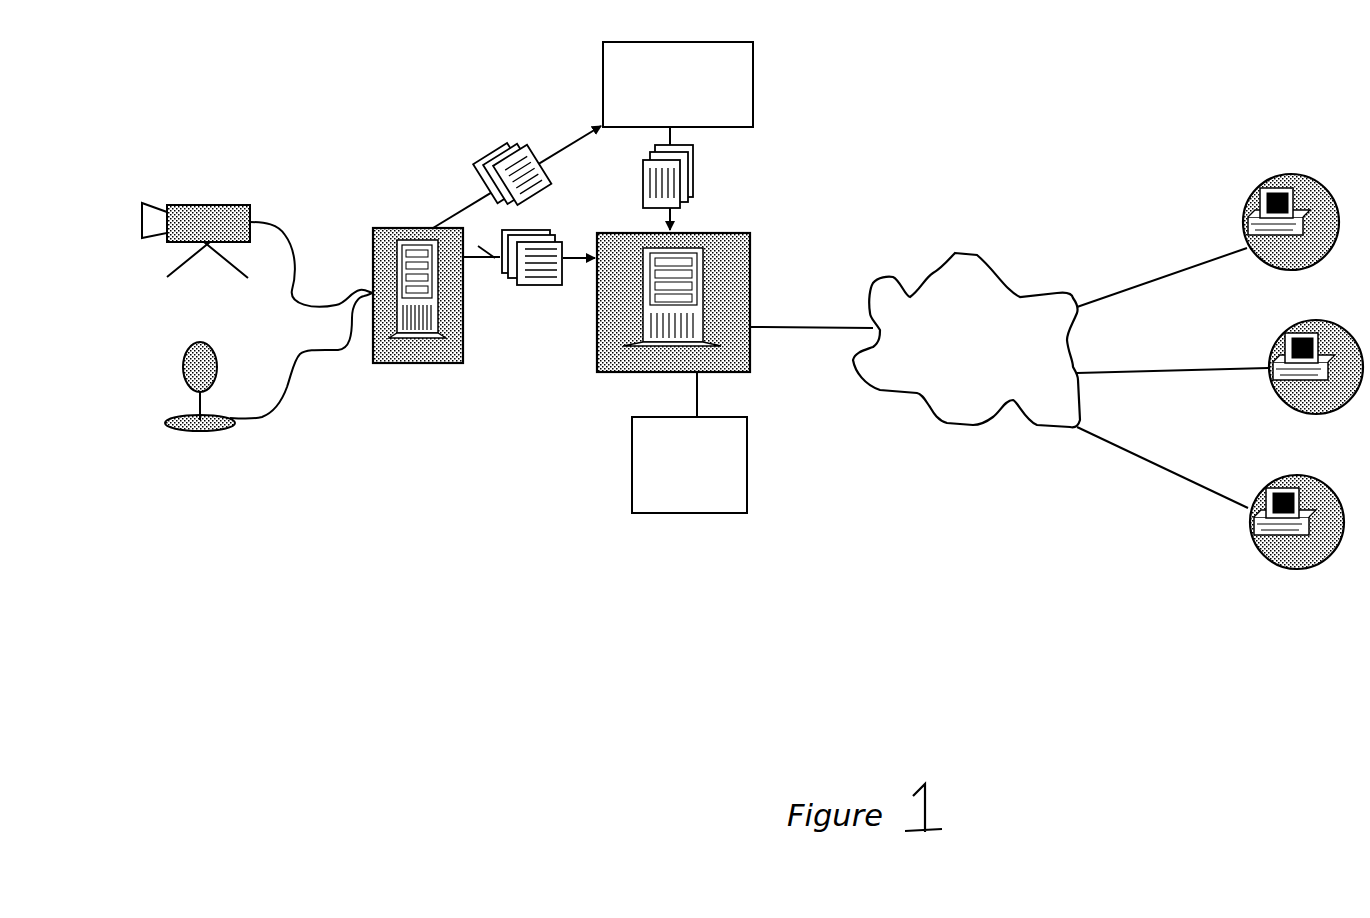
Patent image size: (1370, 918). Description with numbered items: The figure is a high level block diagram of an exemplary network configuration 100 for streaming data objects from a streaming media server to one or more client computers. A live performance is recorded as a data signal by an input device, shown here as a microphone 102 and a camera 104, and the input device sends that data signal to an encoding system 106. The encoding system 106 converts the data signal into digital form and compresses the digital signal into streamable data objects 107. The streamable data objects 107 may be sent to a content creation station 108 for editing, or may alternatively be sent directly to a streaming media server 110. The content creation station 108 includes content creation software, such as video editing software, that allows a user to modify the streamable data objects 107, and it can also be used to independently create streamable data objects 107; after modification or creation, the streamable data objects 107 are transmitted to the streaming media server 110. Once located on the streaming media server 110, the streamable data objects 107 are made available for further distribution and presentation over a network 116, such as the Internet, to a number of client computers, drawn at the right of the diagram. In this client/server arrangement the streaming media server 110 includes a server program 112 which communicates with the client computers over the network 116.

The network configuration 100 is at (588, 534).
The microphone 102 is at (180, 433).
The camera 104 is at (173, 247).
The encoding system 106 is at (444, 312).
The streamable data objects 107 is at (640, 192).
The content creation station 108 is at (704, 20).
The streaming media server 110 is at (753, 263).
The server program 112 is at (729, 517).
The network 116 is at (955, 253).